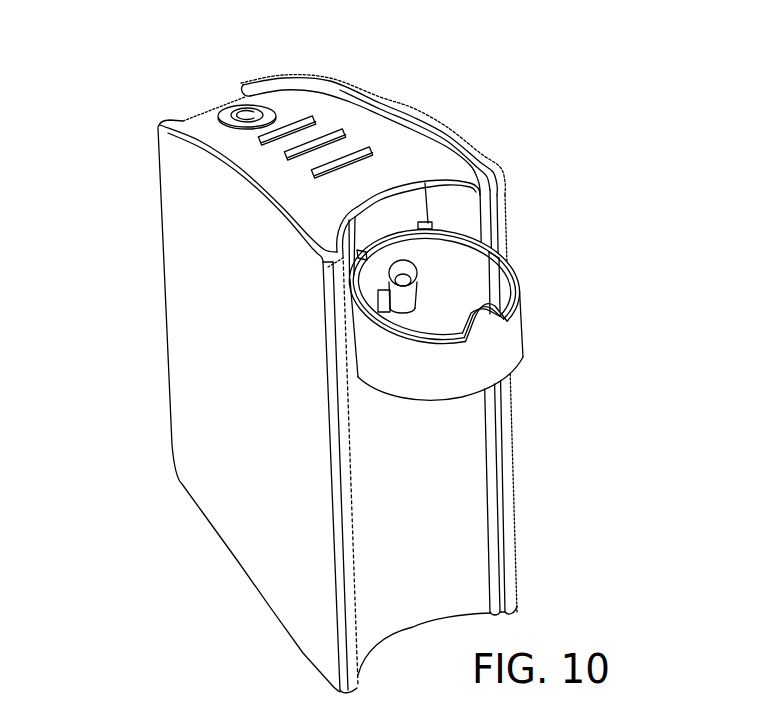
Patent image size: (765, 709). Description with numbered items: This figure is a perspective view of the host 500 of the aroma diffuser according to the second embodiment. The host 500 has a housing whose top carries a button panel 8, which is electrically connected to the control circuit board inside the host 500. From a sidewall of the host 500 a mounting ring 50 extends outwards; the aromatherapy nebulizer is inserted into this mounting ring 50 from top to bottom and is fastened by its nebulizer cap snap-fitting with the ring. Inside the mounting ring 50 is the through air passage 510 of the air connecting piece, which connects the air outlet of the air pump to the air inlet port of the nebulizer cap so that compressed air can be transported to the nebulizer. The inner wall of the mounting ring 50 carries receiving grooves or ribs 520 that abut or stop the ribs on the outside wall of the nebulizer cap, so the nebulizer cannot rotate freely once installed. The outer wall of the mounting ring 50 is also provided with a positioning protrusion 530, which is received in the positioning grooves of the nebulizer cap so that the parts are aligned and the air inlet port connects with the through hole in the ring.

The host 500 is at (153, 62).
The button panel 8 is at (254, 107).
The mounting ring 50 is at (511, 247).
The air passage 510 is at (407, 272).
The ribs 520 is at (500, 268).
The positioning protrusion 530 is at (488, 322).